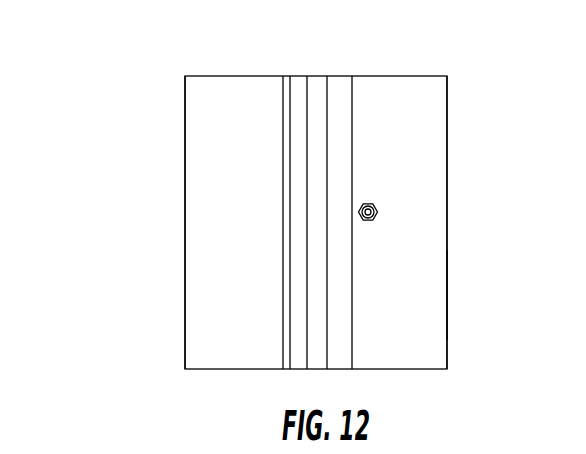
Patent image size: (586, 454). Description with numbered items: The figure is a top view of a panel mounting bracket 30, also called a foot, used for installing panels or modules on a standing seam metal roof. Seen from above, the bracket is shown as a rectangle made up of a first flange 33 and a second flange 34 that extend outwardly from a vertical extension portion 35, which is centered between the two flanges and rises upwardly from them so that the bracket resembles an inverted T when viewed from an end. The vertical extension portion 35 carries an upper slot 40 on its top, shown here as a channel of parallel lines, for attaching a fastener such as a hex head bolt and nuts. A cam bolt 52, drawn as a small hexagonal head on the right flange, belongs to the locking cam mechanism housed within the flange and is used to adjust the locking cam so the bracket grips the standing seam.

The panel mounting bracket 30 is at (88, 168).
The first flange 33 is at (426, 291).
The second flange 34 is at (210, 273).
The vertical extension portion 35 is at (399, 199).
The upper slot 40 is at (315, 84).
The cam bolt 52 is at (378, 205).